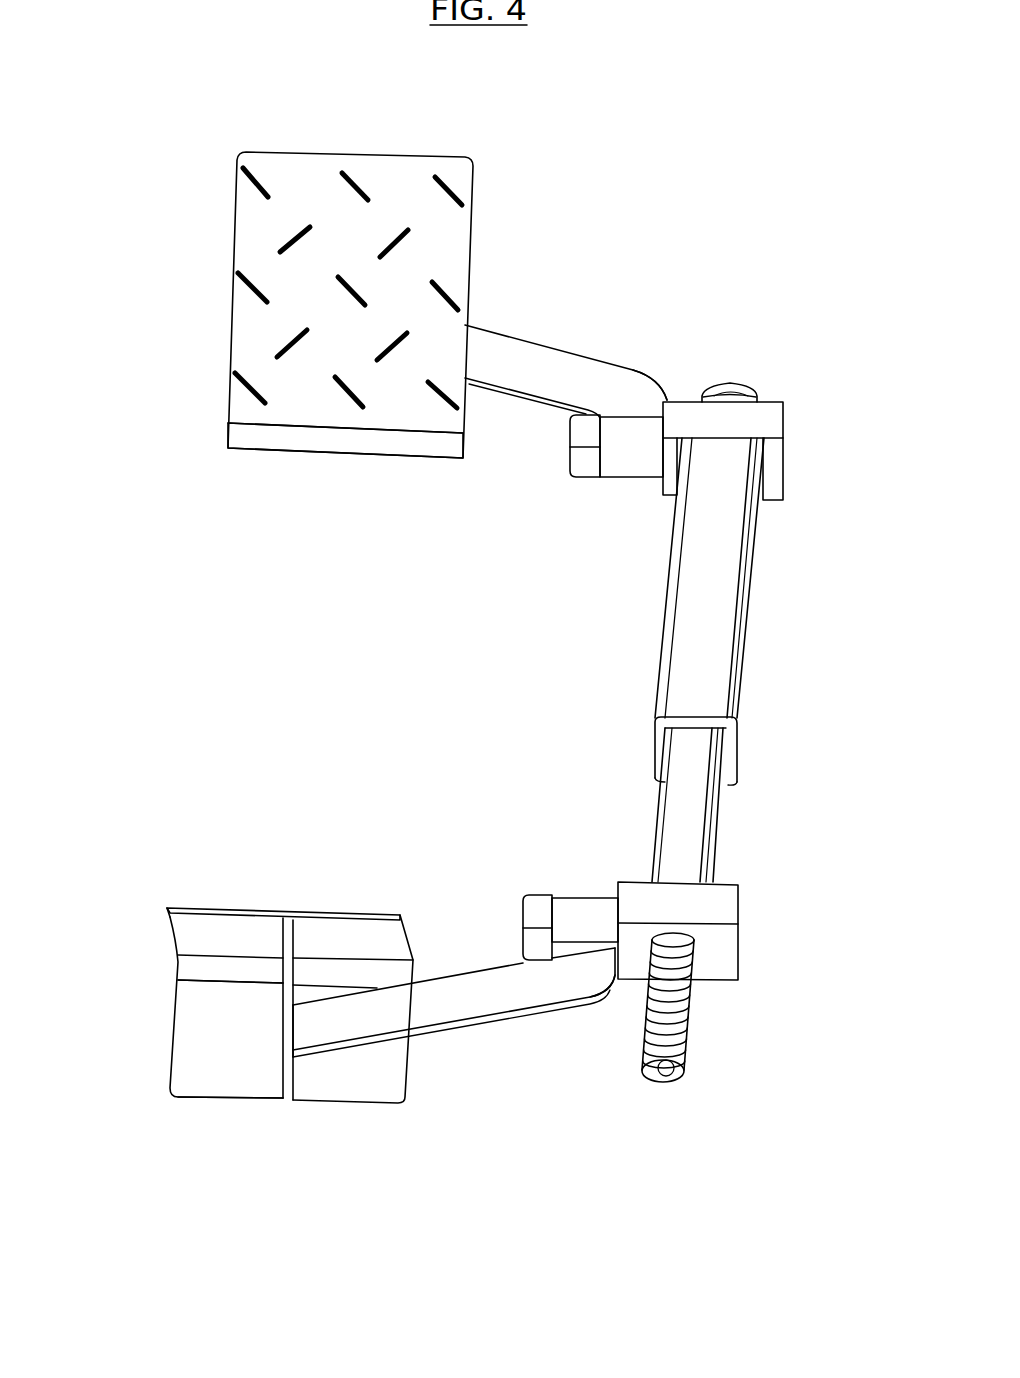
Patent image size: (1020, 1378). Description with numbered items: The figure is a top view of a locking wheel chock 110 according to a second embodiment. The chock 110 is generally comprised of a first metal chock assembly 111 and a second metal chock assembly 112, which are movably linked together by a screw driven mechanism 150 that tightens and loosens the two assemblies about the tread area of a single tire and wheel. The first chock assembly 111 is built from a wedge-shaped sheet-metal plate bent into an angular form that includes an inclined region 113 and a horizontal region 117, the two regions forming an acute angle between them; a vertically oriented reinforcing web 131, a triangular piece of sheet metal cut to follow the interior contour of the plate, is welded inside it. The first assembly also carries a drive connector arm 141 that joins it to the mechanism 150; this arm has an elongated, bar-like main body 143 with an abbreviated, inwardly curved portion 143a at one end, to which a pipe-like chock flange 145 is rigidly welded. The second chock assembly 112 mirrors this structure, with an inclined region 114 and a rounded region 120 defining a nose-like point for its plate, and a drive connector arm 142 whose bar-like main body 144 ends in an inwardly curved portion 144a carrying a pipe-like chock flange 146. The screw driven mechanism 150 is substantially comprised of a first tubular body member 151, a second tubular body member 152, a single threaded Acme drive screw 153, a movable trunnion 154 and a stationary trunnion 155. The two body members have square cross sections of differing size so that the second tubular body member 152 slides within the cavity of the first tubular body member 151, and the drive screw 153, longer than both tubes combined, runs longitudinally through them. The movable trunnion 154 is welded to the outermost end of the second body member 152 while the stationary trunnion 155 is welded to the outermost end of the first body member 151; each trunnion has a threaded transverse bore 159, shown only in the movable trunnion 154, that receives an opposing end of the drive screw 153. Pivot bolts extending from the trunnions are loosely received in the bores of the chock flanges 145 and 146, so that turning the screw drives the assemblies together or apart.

The locking wheel chock 110 is at (292, 672).
The first metal chock assembly 111 is at (160, 1150).
The second metal chock assembly 112 is at (200, 294).
The inclined region 113 is at (210, 907).
The inclined region 114 is at (315, 195).
The horizontal region 117 is at (213, 1037).
The rounded region 120 is at (320, 452).
The reinforcing web 131 is at (293, 962).
The drive connector arm 141 is at (451, 1058).
The drive connector arm 142 is at (536, 316).
The main body 143 is at (488, 990).
The inwardly curved portion 143a is at (578, 955).
The main body 144 is at (525, 397).
The inwardly curved portion 144a is at (647, 408).
The chock flange 145 is at (588, 898).
The chock flange 146 is at (620, 483).
The screw driven mechanism 150 is at (792, 724).
The first tubular body member 151 is at (757, 570).
The second tubular body member 152 is at (722, 812).
The drive screw 153 is at (684, 1026).
The movable trunnion 154 is at (739, 909).
The stationary trunnion 155 is at (787, 428).
The transverse bore 159 is at (701, 943).